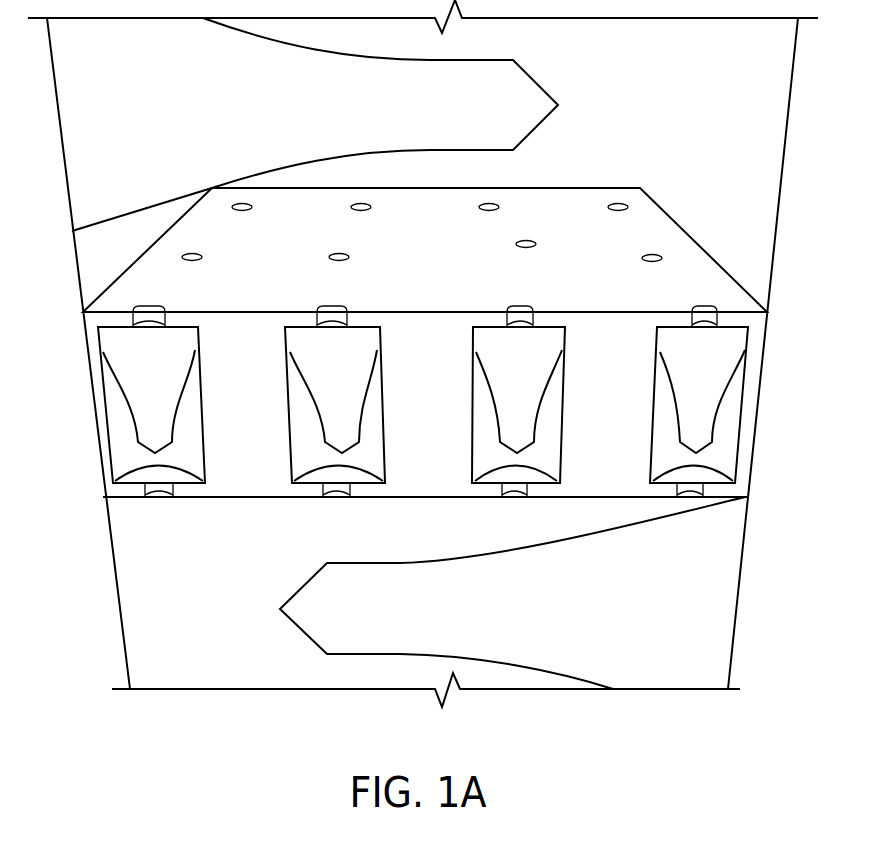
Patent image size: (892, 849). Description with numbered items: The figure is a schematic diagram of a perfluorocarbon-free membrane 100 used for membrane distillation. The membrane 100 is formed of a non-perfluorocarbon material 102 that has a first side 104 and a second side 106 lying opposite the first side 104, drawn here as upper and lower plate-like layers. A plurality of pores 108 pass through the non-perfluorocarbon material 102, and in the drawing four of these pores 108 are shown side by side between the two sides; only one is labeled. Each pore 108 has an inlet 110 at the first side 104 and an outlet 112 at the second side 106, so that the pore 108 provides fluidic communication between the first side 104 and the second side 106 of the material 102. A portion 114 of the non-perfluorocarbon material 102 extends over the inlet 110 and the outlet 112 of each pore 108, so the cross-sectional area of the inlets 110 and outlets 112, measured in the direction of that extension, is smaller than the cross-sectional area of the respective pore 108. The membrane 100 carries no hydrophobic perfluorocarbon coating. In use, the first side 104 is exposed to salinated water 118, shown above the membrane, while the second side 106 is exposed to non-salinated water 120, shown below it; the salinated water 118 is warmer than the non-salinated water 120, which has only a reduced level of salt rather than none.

The perfluorocarbon-free membrane 100 is at (690, 231).
The non-perfluorocarbon material 102 is at (230, 287).
The first side 104 is at (398, 293).
The second side 106 is at (410, 500).
The pore 108 is at (520, 413).
The inlet 110 is at (527, 316).
The outlet 112 is at (513, 498).
The portion of the non-perfluorocarbon material 114 is at (490, 318).
The salinated water 118 is at (315, 124).
The non-salinated water 120 is at (512, 593).